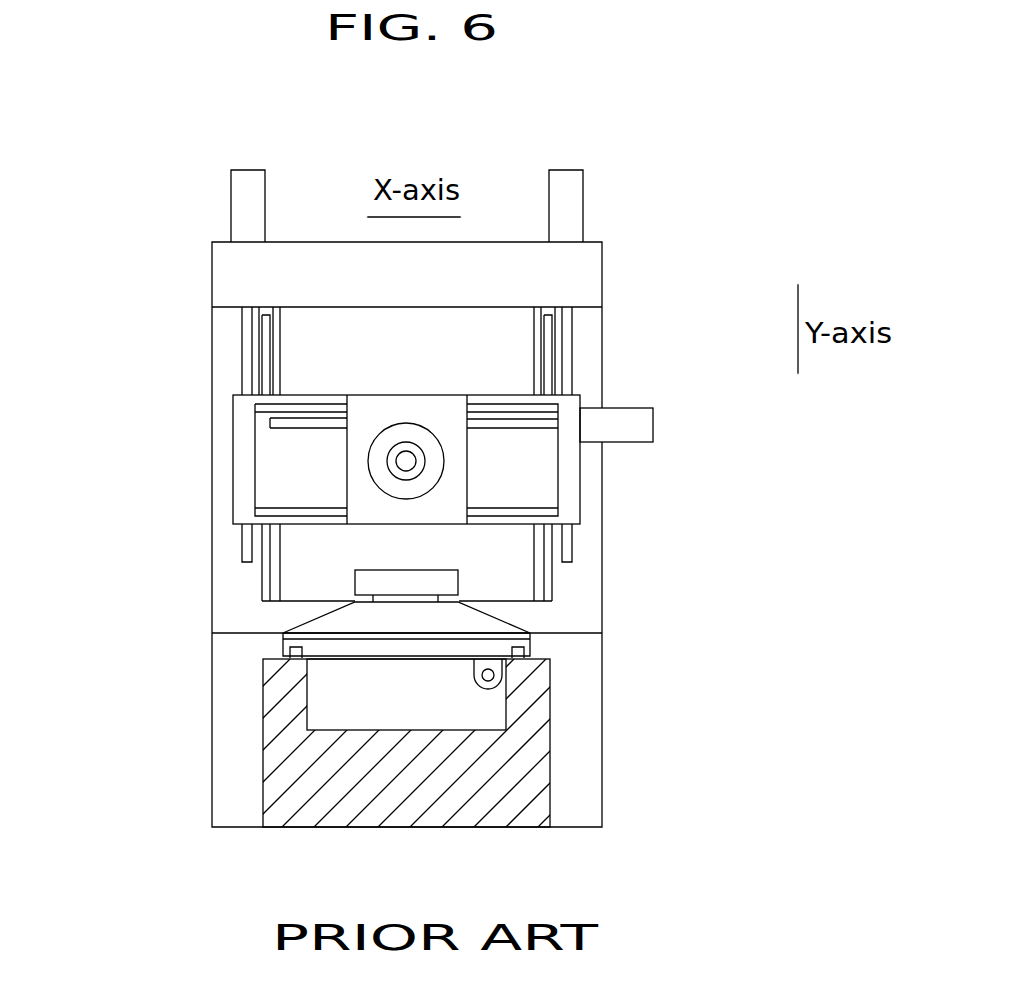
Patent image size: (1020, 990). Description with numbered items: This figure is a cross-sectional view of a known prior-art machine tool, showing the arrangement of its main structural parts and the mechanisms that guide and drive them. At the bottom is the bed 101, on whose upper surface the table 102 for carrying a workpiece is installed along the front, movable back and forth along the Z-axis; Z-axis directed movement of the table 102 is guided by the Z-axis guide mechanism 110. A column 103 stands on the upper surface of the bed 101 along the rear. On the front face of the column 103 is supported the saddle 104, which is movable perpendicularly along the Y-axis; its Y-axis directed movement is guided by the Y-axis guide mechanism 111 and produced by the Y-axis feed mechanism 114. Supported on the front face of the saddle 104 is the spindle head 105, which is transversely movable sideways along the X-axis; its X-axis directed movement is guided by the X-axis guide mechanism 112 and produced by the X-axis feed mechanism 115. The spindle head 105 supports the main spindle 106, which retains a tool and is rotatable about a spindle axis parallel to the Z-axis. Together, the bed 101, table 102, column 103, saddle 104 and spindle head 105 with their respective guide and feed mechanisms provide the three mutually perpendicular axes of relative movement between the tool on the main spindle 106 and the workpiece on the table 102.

The bed 101 is at (270, 768).
The table 102 is at (363, 582).
The column 103 is at (213, 275).
The saddle 104 is at (240, 485).
The spindle head 105 is at (360, 456).
The main spindle 106 is at (420, 460).
The Z-axis guide mechanism 110 is at (290, 645).
The Y-axis guide mechanism 111 is at (265, 357).
The X-axis guide mechanism 112 is at (302, 403).
The Y-axis feed mechanism 114 is at (203, 213).
The X-axis feed mechanism 115 is at (687, 420).